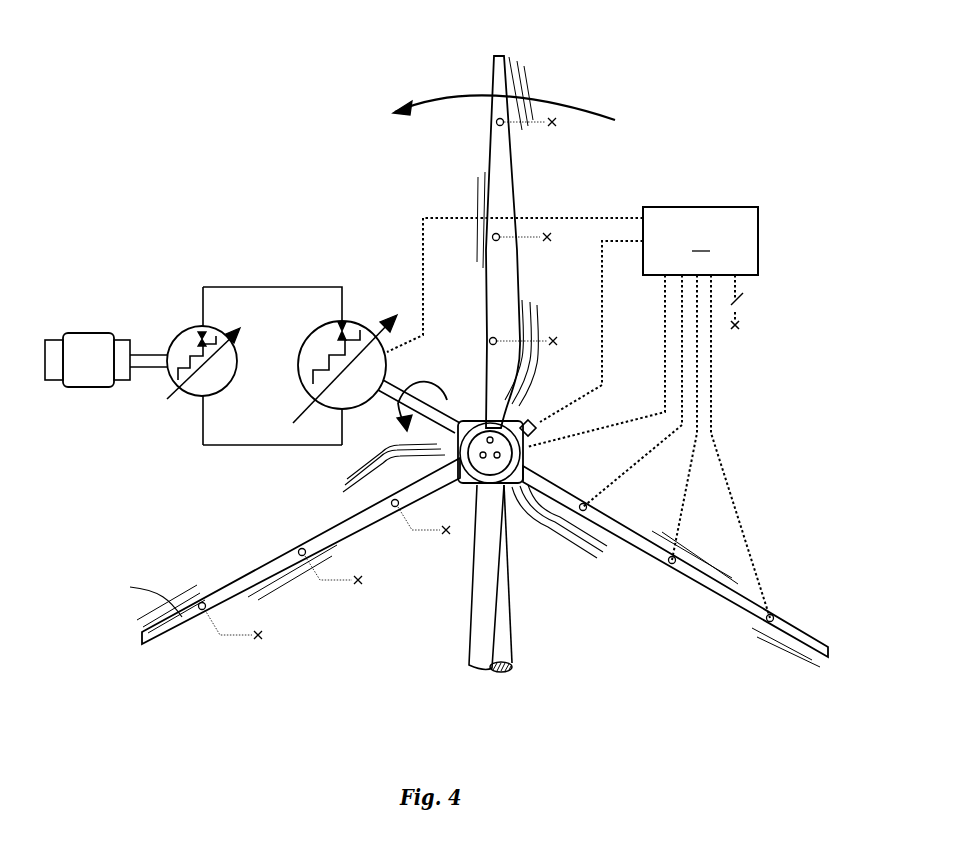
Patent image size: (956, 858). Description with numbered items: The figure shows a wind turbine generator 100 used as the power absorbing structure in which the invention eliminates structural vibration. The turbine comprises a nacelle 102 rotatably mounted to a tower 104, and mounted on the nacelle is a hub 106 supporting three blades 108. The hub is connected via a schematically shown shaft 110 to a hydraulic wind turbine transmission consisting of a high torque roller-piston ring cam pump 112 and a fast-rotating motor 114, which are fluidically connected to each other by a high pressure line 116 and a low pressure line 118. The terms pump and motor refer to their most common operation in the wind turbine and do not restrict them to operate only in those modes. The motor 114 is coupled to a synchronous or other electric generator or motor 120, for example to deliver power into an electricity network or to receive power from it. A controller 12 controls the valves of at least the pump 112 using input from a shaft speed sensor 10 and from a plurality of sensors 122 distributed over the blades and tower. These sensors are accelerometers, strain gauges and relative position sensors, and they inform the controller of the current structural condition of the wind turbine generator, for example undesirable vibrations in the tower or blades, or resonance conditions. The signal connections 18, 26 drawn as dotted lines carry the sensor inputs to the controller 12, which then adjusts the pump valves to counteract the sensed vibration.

The wind turbine generator 100 is at (98, 150).
The shaft speed sensor 10 is at (540, 420).
The controller 12 is at (700, 241).
The sensor signal lines 18 is at (578, 371).
The sensor signal lines 26 is at (595, 217).
The nacelle 102 is at (490, 462).
The tower 104 is at (493, 647).
The hub 106 is at (477, 487).
The blades 108 is at (183, 617).
The shaft 110 is at (418, 418).
The roller-piston ring cam pump 112 is at (328, 343).
The fast-rotating motor 114 is at (197, 339).
The high pressure line 116 is at (250, 287).
The low pressure line 118 is at (203, 446).
The electric generator or motor 120 is at (102, 370).
The sensors 122 is at (677, 565).